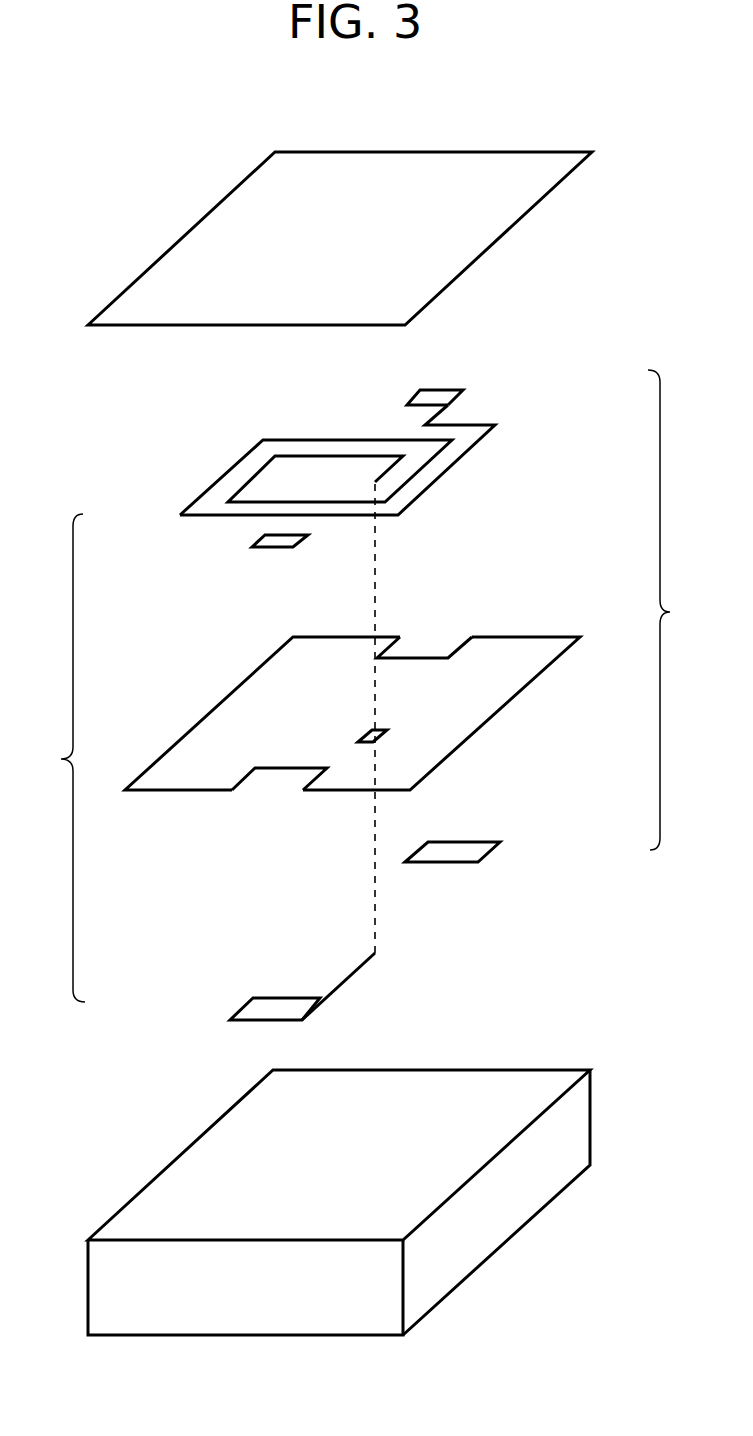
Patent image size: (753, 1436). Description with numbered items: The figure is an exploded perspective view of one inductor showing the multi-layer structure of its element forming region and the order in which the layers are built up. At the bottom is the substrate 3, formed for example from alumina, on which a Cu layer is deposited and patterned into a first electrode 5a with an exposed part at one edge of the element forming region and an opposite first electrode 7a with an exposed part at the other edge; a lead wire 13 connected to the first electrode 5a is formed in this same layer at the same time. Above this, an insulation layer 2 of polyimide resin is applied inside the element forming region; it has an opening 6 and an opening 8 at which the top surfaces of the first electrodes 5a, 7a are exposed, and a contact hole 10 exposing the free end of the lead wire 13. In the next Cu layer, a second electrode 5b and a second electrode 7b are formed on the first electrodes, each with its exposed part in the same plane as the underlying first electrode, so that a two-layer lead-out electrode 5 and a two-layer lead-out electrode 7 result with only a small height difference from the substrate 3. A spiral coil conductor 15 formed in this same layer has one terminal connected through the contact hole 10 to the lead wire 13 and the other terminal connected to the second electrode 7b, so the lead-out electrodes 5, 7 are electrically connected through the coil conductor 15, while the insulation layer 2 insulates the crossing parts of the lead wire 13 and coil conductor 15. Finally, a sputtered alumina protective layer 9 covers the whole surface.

The insulation layer 2 is at (235, 710).
The substrate 3 is at (592, 1108).
The lead-out electrode 5 is at (60, 758).
The first electrode 5a is at (273, 998).
The second electrode 5b is at (258, 535).
The opening 6 is at (273, 787).
The lead-out electrode 7 is at (671, 610).
The first electrode 7a is at (452, 850).
The second electrode 7b is at (440, 392).
The opening 8 is at (427, 645).
The protective layer 9 is at (460, 165).
The contact hole 10 is at (380, 733).
The lead wire 13 is at (358, 973).
The coil conductor 15 is at (293, 438).